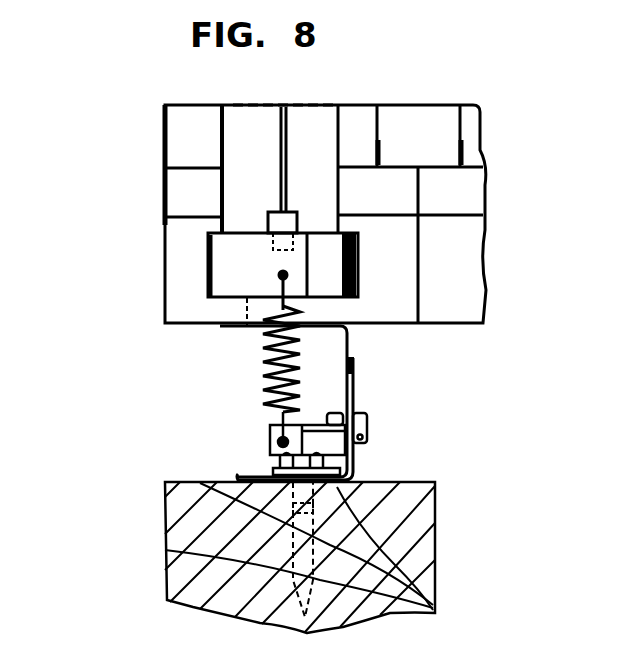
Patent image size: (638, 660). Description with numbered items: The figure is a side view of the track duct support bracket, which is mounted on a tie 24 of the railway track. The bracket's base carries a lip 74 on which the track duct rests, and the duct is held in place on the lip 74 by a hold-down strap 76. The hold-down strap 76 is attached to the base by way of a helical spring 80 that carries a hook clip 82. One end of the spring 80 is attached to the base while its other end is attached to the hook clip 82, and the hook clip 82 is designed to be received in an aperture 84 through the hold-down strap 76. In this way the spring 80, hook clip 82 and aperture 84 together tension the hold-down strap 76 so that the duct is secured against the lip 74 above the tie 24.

The tie 24 is at (622, 6).
The lip 74 is at (318, 330).
The hold-down strap 76 is at (318, 145).
The helical spring 80 is at (263, 382).
The hook clip 82 is at (232, 277).
The aperture 84 is at (268, 221).